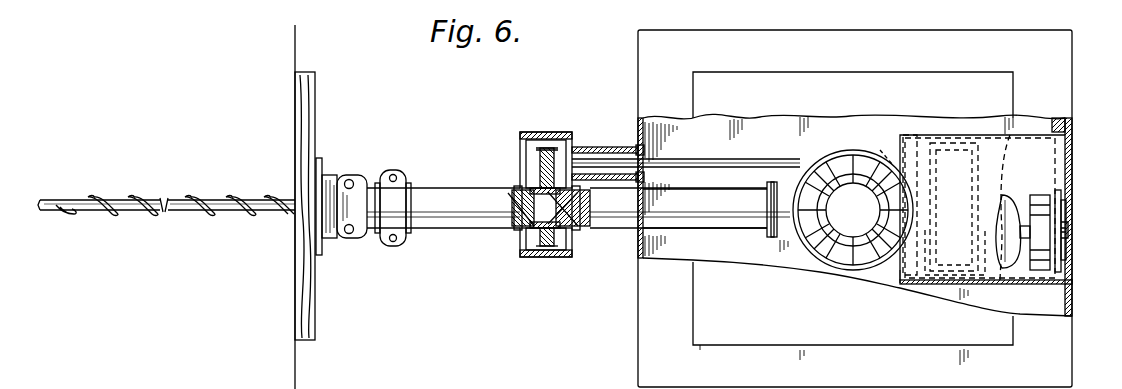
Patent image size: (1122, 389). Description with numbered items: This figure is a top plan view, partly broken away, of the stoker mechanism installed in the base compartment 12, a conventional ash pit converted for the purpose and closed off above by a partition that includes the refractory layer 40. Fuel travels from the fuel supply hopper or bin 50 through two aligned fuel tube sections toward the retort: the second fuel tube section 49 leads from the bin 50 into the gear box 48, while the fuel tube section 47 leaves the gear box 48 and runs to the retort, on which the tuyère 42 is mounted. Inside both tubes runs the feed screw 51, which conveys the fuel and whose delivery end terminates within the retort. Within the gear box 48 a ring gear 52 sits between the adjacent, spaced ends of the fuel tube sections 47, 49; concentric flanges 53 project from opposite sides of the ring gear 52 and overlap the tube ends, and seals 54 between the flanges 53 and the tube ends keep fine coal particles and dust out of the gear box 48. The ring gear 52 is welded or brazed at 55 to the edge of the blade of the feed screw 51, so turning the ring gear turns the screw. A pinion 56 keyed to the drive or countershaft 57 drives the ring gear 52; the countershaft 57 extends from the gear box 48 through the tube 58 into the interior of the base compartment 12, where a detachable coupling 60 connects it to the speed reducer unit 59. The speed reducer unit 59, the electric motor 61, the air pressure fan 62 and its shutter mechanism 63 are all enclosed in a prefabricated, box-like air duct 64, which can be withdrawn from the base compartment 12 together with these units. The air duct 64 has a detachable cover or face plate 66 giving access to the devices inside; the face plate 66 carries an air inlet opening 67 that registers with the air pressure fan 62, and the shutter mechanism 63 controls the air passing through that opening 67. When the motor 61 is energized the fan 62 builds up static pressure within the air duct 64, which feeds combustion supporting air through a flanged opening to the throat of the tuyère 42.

The base compartment 12 is at (645, 252).
The refractory layer 40 is at (851, 70).
The tuyère 42 is at (853, 210).
The fuel tube section 47 is at (710, 230).
The gear box 48 is at (555, 257).
The second fuel tube section 49 is at (462, 228).
The fuel supply hopper or bin 50 is at (299, 364).
The feed screw 51 is at (252, 190).
The ring gear 52 is at (545, 250).
The concentric flanges 53 is at (536, 230).
The seals 54 is at (540, 188).
The weld or braze 55 is at (516, 190).
The pinion 56 is at (554, 142).
The drive or countershaft 57 is at (705, 157).
The tube 58 is at (606, 147).
The speed reducer unit 59 is at (950, 283).
The detachable coupling 60 is at (903, 160).
The electric motor 61 is at (1014, 198).
The air pressure fan 62 is at (1040, 194).
The shutter mechanism 63 is at (1064, 250).
The box-like air duct 64 is at (1018, 284).
The detachable cover or face plate 66 is at (1073, 176).
The air inlet opening 67 is at (1062, 208).